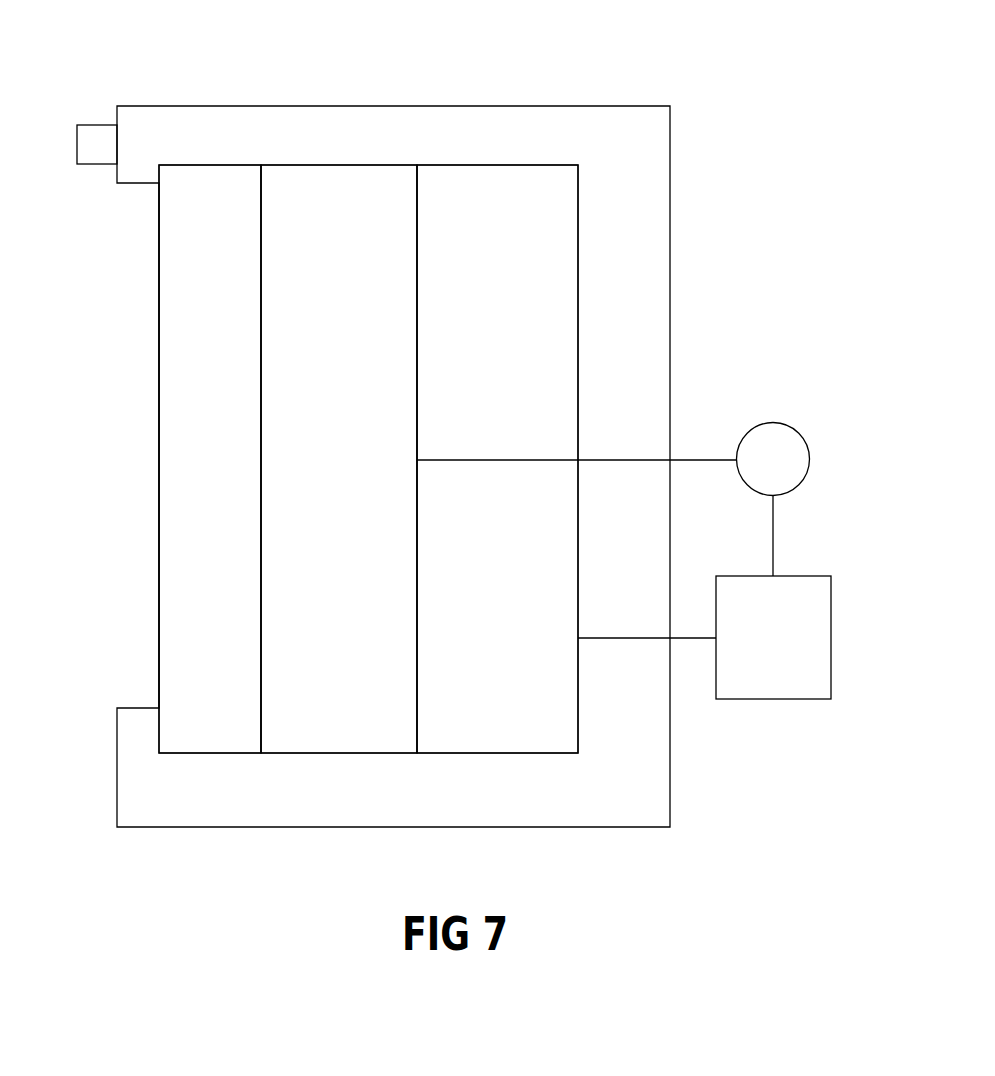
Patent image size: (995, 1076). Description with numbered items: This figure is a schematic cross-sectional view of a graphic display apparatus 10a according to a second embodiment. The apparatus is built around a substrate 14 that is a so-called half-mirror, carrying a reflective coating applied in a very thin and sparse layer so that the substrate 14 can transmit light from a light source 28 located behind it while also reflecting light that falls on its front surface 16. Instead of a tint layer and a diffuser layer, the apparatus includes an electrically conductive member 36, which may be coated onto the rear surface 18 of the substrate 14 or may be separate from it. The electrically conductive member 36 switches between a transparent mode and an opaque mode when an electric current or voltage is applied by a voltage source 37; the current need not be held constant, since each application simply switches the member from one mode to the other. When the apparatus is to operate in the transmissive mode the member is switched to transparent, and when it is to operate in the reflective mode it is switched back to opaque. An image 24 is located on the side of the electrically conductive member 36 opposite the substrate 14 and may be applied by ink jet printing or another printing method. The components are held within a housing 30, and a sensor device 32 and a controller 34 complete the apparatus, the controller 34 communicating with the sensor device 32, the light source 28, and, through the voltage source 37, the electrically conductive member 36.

The graphic display apparatus 10a is at (725, 92).
The substrate 14 is at (195, 304).
The front surface 16 is at (159, 618).
The rear surface 18 is at (261, 739).
The image 24 is at (417, 704).
The light source 28 is at (500, 307).
The housing 30 is at (426, 124).
The sensor device 32 is at (100, 125).
The controller 34 is at (773, 699).
The electrically conductive member 36 is at (298, 188).
The voltage source 37 is at (773, 423).